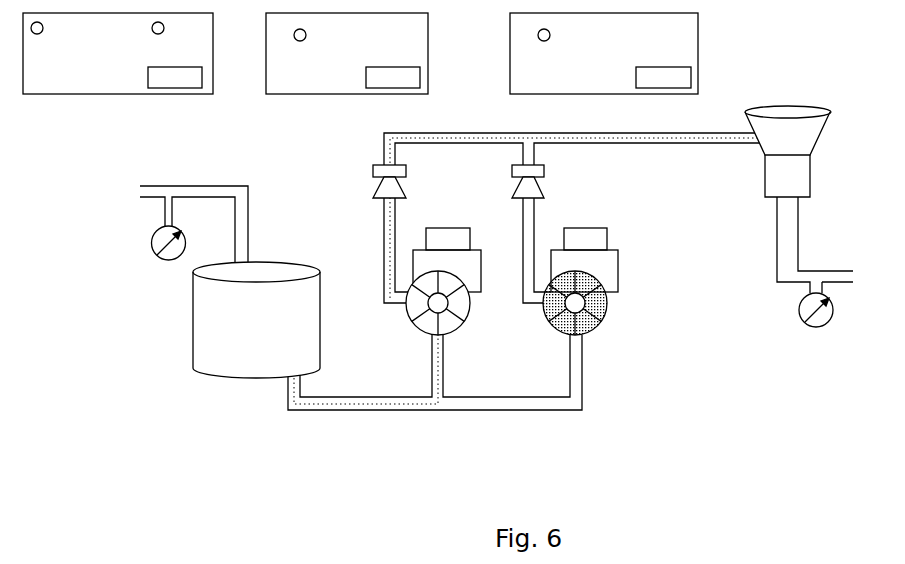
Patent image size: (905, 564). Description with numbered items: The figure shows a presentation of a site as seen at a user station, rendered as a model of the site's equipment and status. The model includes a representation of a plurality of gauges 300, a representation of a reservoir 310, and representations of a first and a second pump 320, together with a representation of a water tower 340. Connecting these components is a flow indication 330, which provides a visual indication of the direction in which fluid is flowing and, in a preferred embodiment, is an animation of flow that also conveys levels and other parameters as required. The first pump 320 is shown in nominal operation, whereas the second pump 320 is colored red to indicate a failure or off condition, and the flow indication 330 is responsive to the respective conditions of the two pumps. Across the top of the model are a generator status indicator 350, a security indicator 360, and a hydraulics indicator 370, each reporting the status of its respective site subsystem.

The gauges 300 is at (151, 240).
The reservoir 310 is at (193, 310).
The first and second pump 320 is at (412, 318).
The flow indication 330 is at (700, 143).
The water tower 340 is at (765, 175).
The generator status indicator 350 is at (117, 94).
The security indicator 360 is at (347, 94).
The hydraulics indicator 370 is at (603, 94).